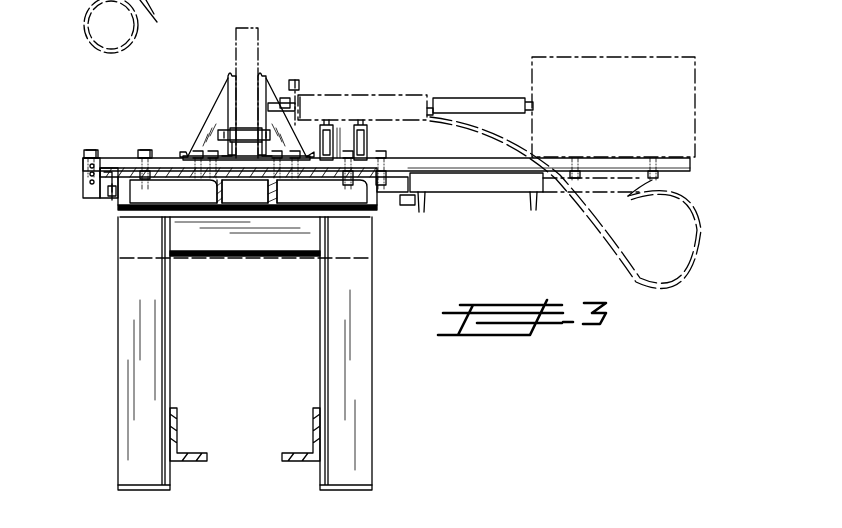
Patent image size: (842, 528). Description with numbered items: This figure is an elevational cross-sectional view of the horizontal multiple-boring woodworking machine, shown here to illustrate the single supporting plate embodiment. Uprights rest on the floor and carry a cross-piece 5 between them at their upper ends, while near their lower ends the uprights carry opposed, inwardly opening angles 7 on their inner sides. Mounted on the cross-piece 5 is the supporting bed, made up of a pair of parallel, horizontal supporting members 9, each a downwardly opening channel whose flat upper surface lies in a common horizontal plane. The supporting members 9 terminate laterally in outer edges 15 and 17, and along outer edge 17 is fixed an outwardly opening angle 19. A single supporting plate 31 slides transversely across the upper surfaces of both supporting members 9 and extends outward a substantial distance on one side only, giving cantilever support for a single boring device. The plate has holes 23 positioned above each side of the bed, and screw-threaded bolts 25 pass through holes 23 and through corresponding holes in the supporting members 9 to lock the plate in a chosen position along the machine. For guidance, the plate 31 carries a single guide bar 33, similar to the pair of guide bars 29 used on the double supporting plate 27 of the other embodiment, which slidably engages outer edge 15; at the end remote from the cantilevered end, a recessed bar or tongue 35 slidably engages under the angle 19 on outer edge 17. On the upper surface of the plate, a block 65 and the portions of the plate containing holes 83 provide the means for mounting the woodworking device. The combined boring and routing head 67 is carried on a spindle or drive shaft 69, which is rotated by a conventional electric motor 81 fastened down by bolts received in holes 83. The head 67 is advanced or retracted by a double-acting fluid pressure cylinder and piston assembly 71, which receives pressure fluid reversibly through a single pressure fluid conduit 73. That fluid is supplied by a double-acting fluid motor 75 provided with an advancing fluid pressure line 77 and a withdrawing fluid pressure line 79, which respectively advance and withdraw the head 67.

The cross-piece 5 is at (232, 245).
The inwardly opening angles 7 is at (190, 454).
The supporting members 9 is at (226, 183).
The outer edge 15 is at (387, 188).
The outer edge 17 is at (112, 168).
The outwardly opening angle 19 is at (110, 196).
The holes 23 is at (212, 150).
The screw-threaded bolts 25 is at (138, 158).
The supporting plate 27 is at (232, 22).
The guide bars 29 is at (190, 26).
The single supporting plates 31 is at (440, 138).
The guide bar 33 is at (412, 214).
The recessed bar or tongue 35 is at (83, 190).
The block 65 is at (345, 130).
The combined boring and routing head 67 is at (297, 95).
The spindle or drive shaft 69 is at (462, 105).
The double-acting fluid pressure cylinder and piston assembly 71 is at (400, 105).
The pressure fluid conduit 73 is at (612, 265).
The double-acting fluid motor 75 is at (496, 144).
The advancing fluid pressure line 77 is at (428, 212).
The withdrawing fluid pressure line 79 is at (530, 214).
The electric motor 81 is at (606, 70).
The holes 83 is at (636, 190).